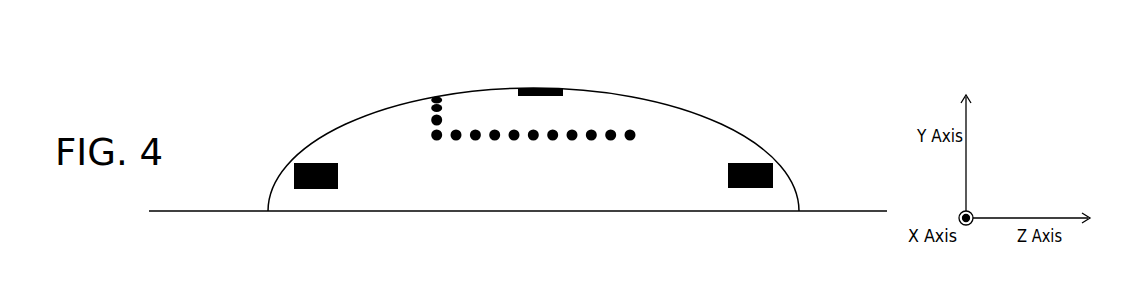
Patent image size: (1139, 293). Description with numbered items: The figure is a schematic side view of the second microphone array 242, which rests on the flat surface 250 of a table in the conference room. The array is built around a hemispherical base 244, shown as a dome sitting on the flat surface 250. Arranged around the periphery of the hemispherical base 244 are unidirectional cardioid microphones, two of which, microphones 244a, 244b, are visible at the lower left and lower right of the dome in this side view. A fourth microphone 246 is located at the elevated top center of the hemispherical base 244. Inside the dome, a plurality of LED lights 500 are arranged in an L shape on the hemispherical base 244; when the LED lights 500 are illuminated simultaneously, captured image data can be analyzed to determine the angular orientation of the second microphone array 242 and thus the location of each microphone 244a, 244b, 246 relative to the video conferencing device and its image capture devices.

The second microphone array 242 is at (766, 116).
The hemispherical base 244 is at (317, 138).
The unidirectional cardioid microphone 244a is at (298, 158).
The unidirectional cardioid microphone 244b is at (773, 178).
The fourth microphone 246 is at (543, 87).
The flat surface 250 is at (207, 211).
The LED lights 500 is at (525, 141).